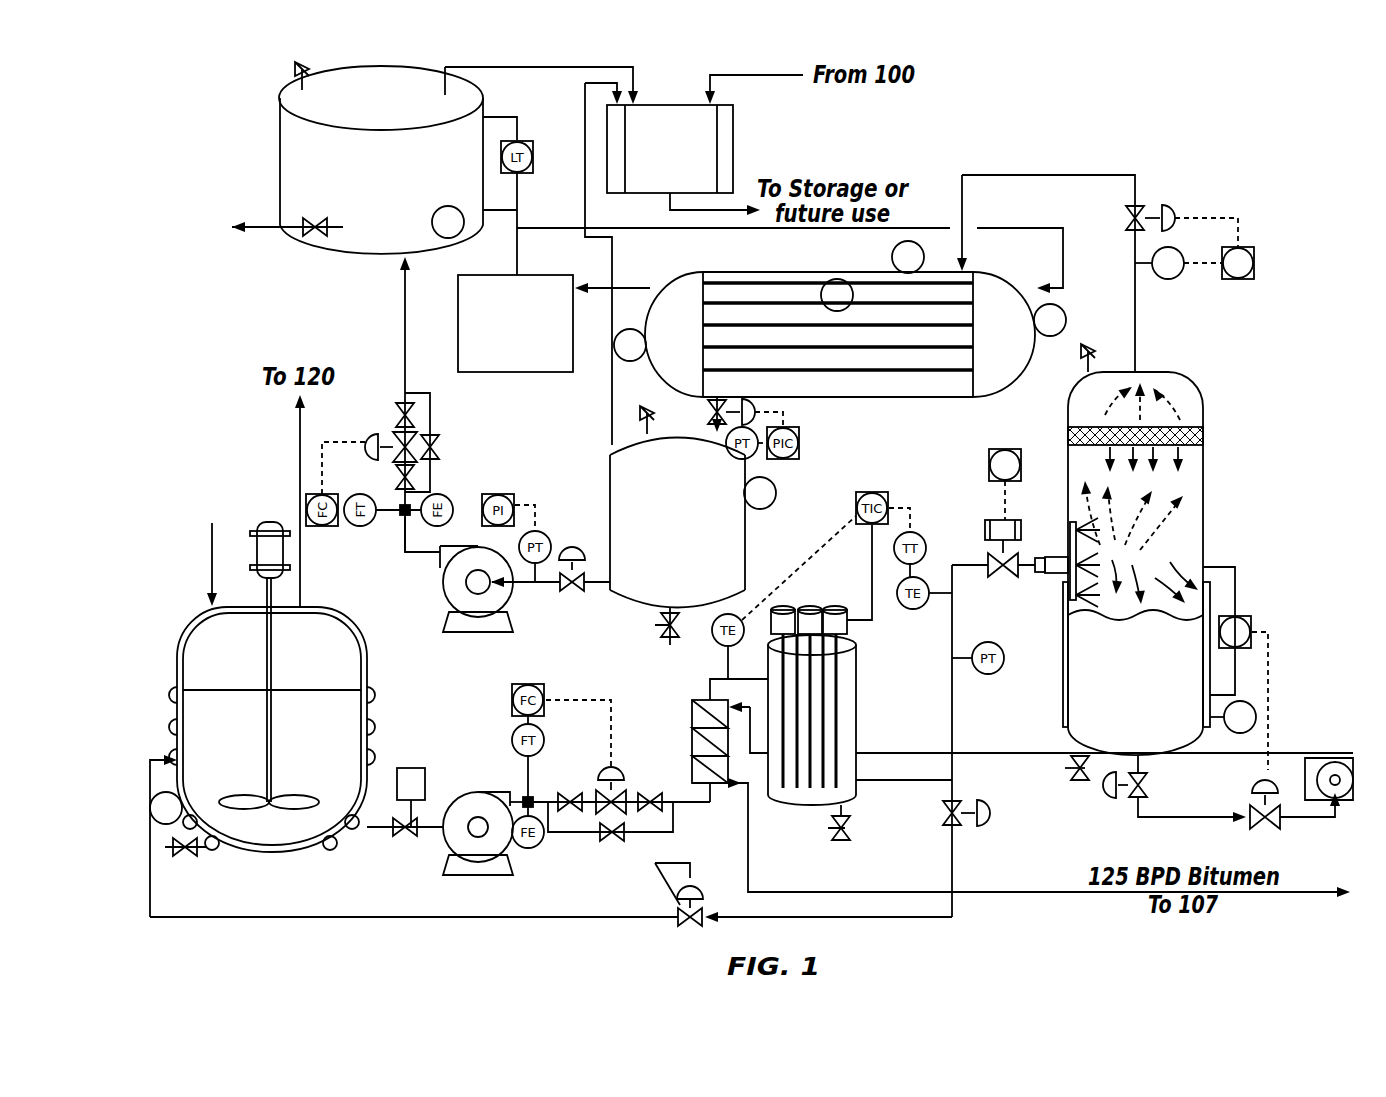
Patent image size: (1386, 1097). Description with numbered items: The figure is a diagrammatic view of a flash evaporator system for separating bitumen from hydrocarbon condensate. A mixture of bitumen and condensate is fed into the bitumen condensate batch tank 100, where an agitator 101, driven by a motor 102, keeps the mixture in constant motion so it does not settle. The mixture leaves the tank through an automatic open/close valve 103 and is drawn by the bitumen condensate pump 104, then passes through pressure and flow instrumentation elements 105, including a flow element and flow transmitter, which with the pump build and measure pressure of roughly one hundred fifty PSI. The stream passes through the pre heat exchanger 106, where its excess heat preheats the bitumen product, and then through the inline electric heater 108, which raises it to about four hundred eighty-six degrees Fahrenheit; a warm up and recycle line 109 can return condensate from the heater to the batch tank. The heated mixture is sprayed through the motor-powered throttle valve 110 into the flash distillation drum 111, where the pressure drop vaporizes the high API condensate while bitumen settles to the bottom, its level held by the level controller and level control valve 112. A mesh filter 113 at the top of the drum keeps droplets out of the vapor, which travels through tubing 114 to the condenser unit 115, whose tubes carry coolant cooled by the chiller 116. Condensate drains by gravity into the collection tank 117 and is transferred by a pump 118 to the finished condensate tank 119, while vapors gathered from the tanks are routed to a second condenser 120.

The bitumen condensate batch tank 100 is at (265, 852).
The agitator 101 is at (300, 800).
The motor 102 is at (278, 553).
The automatic open/close valve 103 is at (411, 768).
The bitumen condensate pump 104 is at (478, 792).
The pressure and flow instrumentation elements 105 is at (590, 822).
The pre heat exchanger 106 is at (692, 730).
The inline electric heater 108 is at (802, 805).
The warm up and recycle line 109 is at (855, 917).
The throttle valve 110 is at (1005, 578).
The flash distillation drum 111 is at (1203, 473).
The level controller and level control valve 112 is at (1253, 628).
The filter 113 is at (1203, 438).
The tubing 114 is at (1010, 175).
The condenser unit 115 is at (850, 397).
The chiller 116 is at (515, 323).
The collection tank 117 is at (693, 525).
The pump 118 is at (478, 632).
The finished condensate tank 119 is at (357, 158).
The second condenser 120 is at (670, 149).